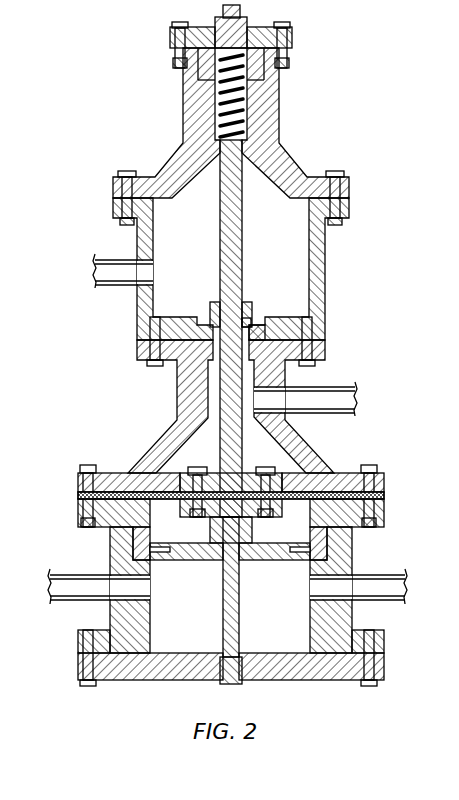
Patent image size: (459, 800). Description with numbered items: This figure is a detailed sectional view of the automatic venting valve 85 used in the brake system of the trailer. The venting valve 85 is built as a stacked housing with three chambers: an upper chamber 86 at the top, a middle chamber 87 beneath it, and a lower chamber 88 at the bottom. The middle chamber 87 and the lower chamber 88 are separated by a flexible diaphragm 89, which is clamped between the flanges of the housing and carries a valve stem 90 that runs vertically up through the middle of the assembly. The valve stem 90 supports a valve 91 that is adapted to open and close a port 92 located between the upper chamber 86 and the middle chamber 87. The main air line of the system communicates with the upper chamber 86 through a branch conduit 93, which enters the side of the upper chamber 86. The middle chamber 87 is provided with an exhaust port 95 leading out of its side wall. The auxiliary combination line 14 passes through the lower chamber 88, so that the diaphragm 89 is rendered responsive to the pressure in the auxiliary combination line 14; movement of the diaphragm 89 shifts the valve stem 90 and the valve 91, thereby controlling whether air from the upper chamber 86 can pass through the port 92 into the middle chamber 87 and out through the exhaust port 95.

The auxiliary combination line 14 is at (48, 592).
The venting valve 85 is at (340, 313).
The upper chamber 86 is at (289, 255).
The middle chamber 87 is at (215, 455).
The lower chamber 88 is at (281, 605).
The flexible diaphragm 89 is at (312, 501).
The valve stem 90 is at (242, 213).
The valve 91 is at (250, 318).
The port 92 is at (254, 326).
The branch conduit 93 is at (92, 277).
The exhaust port 95 is at (357, 398).